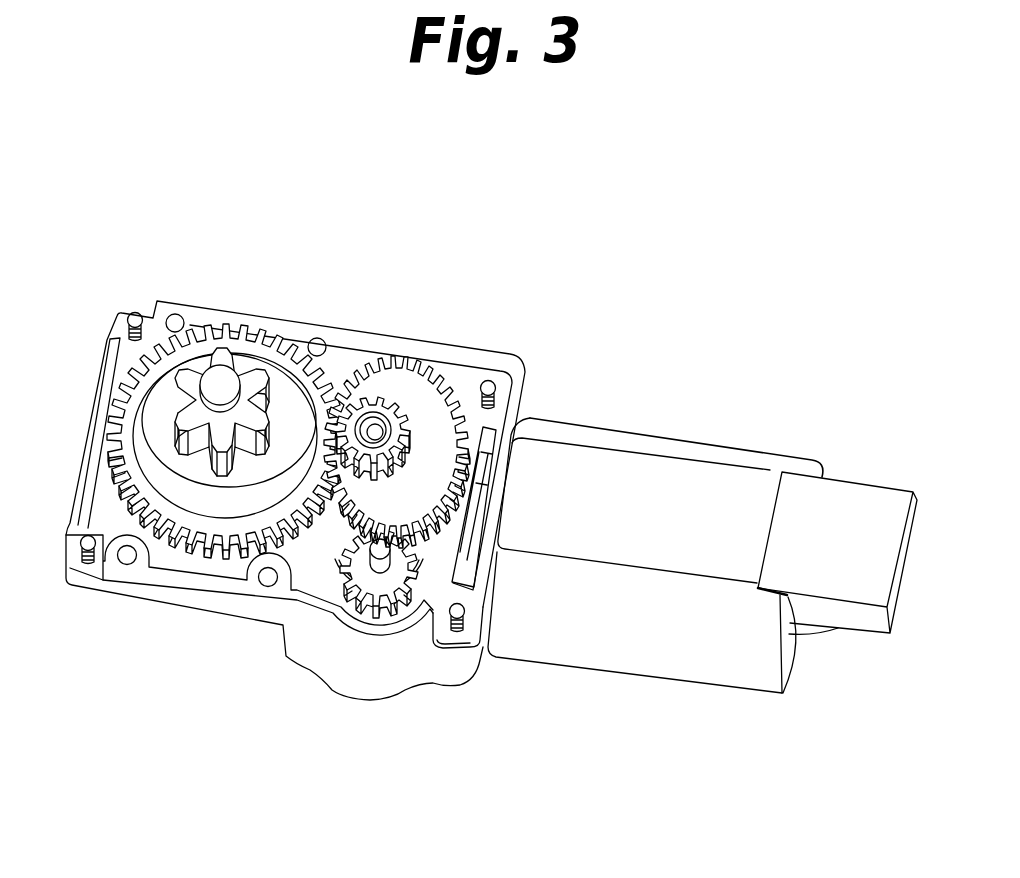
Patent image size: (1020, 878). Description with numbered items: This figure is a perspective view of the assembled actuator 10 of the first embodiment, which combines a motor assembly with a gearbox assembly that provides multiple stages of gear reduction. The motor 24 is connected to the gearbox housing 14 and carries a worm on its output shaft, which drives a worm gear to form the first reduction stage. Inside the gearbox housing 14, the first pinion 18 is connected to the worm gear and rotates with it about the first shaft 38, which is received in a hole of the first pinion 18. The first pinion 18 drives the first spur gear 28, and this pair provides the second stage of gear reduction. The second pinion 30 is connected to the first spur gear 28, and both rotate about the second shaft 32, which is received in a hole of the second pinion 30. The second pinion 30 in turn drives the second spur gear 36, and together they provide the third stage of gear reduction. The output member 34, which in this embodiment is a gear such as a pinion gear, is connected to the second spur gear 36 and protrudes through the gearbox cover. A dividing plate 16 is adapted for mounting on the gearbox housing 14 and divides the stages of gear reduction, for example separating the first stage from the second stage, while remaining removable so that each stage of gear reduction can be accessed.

The actuator 10 is at (642, 313).
The gearbox housing 14 is at (175, 612).
The dividing plate 16 is at (472, 646).
The first pinion 18 is at (365, 595).
The motor 24 is at (693, 442).
The first spur gear 28 is at (450, 390).
The second pinion 30 is at (367, 403).
The second shaft 32 is at (392, 418).
The output member 34 is at (183, 423).
The second spur gear 36 is at (135, 368).
The first shaft 38 is at (386, 568).